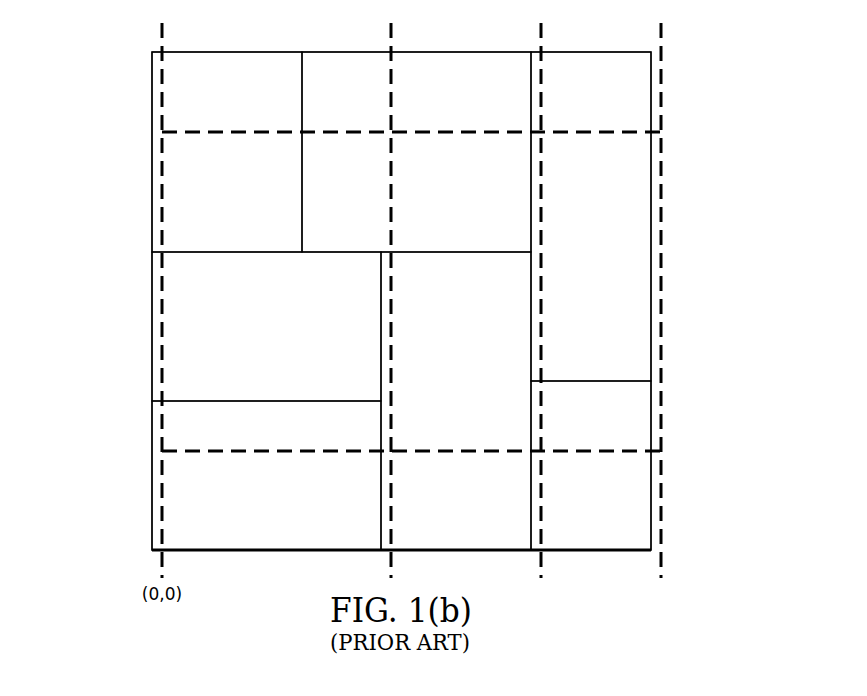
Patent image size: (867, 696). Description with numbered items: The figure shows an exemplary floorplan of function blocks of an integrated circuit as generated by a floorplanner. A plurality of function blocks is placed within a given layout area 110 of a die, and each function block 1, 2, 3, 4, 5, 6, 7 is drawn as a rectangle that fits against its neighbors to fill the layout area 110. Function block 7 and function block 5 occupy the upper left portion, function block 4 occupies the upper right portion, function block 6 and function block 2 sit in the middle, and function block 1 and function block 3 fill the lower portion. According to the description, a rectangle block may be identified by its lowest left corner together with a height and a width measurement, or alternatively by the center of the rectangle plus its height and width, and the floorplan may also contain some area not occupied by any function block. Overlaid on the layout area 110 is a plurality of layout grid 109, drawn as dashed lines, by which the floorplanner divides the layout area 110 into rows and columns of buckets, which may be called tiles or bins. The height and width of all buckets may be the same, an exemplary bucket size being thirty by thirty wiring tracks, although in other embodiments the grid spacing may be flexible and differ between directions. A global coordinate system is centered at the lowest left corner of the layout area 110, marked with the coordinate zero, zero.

The function block 1 is at (266, 475).
The function block 2 is at (456, 401).
The function block 3 is at (591, 465).
The function block 4 is at (591, 216).
The function block 5 is at (416, 152).
The function block 6 is at (266, 326).
The function block 7 is at (227, 152).
The layout grid 109 is at (661, 313).
The layout area 110 is at (113, 103).